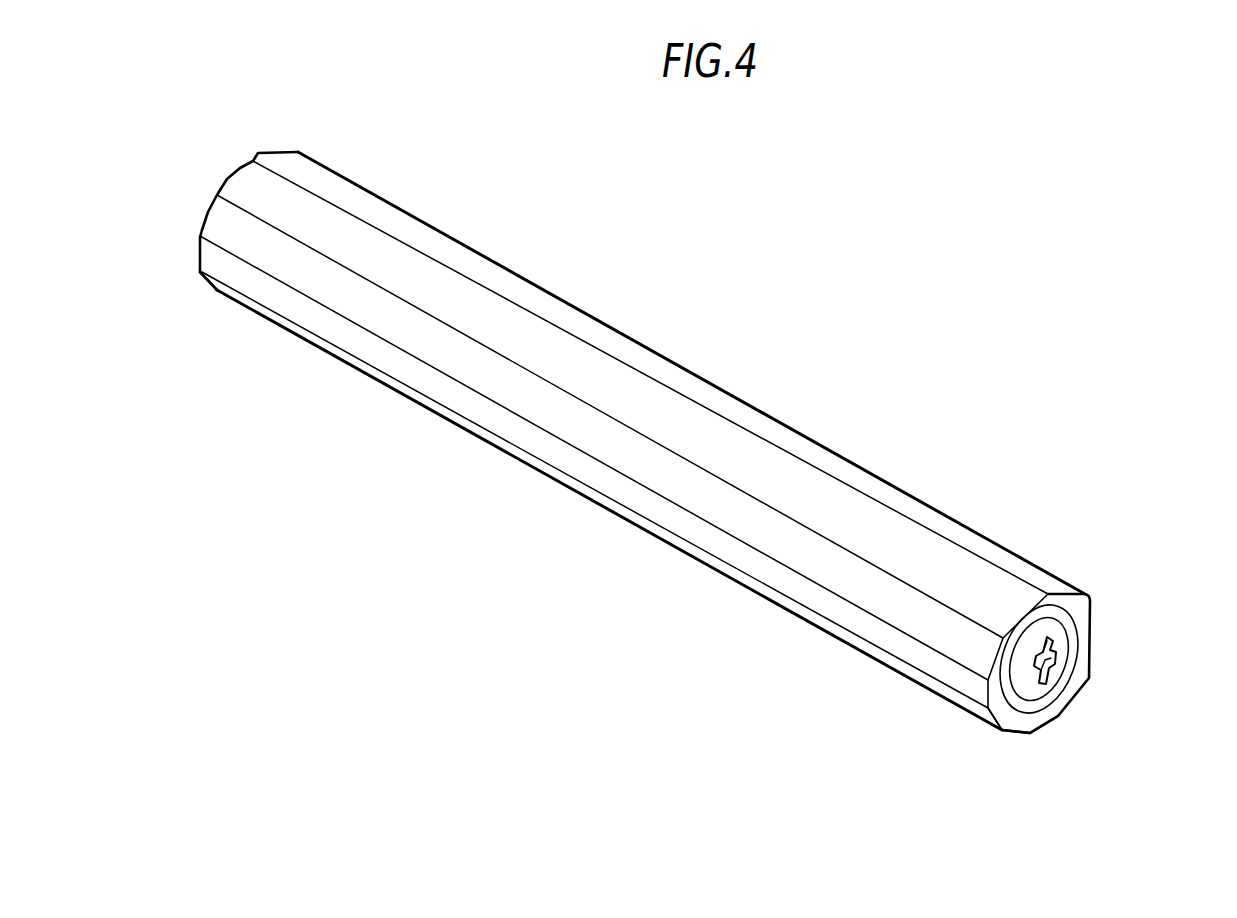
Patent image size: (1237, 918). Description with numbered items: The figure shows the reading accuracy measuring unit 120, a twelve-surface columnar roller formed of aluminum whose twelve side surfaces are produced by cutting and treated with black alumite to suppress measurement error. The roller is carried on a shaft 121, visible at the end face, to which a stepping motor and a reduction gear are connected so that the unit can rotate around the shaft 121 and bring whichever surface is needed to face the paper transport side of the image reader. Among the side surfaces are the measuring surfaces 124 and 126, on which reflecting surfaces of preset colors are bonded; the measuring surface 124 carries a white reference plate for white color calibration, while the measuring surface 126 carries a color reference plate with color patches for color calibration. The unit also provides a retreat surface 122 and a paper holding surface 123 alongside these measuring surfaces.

The reading accuracy measuring unit 120 is at (702, 489).
The shaft 121 is at (1045, 663).
The retreat surface 122 is at (1090, 612).
The paper holding surface 123 is at (988, 567).
The measuring surface 124 is at (1045, 728).
The measuring surface 126 is at (1015, 733).